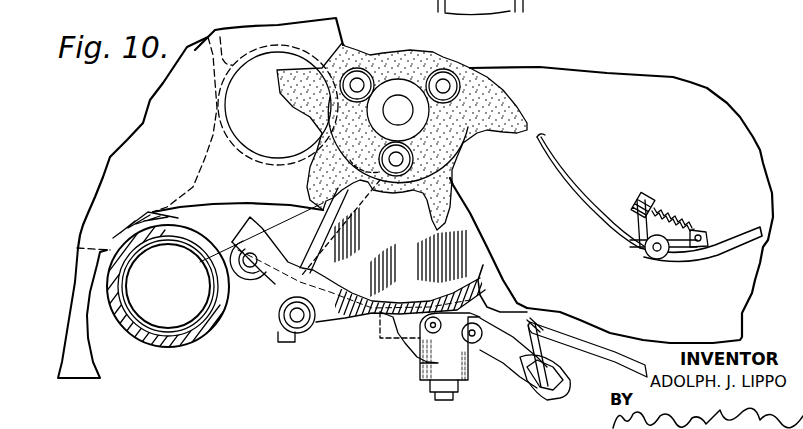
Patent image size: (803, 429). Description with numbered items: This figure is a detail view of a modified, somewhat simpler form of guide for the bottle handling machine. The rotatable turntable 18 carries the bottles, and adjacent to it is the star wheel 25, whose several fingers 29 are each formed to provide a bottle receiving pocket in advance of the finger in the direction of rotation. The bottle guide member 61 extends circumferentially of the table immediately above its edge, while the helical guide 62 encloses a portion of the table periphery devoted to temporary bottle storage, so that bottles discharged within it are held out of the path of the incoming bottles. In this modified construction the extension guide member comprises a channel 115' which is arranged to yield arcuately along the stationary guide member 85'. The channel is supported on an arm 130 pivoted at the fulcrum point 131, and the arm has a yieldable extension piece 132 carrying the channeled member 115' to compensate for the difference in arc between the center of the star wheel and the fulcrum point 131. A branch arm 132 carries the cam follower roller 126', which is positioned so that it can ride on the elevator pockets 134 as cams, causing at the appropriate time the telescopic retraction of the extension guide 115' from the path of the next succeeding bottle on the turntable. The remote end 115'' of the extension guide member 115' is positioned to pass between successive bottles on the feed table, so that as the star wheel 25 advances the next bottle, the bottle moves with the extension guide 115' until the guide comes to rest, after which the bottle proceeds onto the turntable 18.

The rotatable turntable 18 is at (73, 365).
The star wheel 25 is at (488, 108).
The fingers 29 is at (540, 131).
The bottle guide member 61 is at (610, 363).
The helical guide 62 is at (733, 243).
The stationary guide member 85' is at (456, 356).
The channel 115' is at (400, 250).
The remote end of the extension guide member 115'' is at (510, 276).
The cam follower roller 126' is at (344, 268).
The arm 130 is at (366, 214).
The fulcrum point 131 is at (368, 190).
The yieldable extension piece 132 is at (292, 240).
The elevator pockets 134 is at (197, 342).